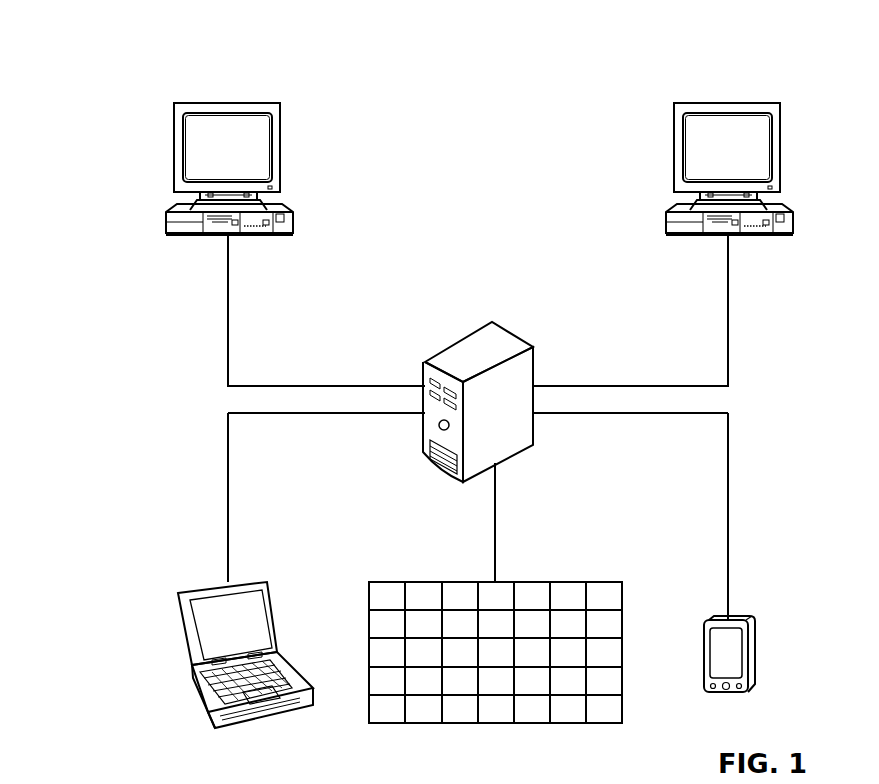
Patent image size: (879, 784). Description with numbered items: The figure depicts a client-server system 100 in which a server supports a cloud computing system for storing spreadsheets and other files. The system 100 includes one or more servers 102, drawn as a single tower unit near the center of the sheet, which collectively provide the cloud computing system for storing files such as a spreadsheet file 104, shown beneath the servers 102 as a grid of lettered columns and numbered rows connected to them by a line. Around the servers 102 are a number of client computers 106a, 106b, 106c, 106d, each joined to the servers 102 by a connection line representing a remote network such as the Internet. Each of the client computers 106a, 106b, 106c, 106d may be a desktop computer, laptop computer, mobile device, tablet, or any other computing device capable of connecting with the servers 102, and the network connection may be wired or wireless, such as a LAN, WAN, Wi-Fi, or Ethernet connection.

The system 100 is at (118, 36).
The servers 102 is at (460, 338).
The spreadsheet file 104 is at (438, 582).
The client computer 106a is at (227, 103).
The client computer 106b is at (727, 103).
The client computer 106c is at (213, 590).
The client computer 106d is at (722, 620).